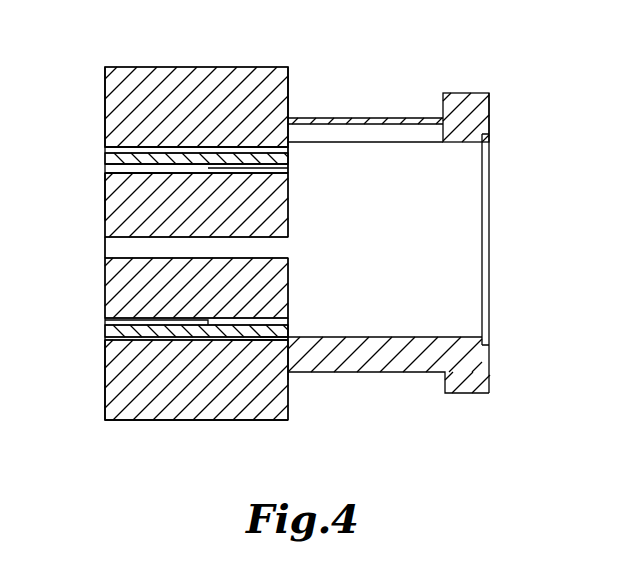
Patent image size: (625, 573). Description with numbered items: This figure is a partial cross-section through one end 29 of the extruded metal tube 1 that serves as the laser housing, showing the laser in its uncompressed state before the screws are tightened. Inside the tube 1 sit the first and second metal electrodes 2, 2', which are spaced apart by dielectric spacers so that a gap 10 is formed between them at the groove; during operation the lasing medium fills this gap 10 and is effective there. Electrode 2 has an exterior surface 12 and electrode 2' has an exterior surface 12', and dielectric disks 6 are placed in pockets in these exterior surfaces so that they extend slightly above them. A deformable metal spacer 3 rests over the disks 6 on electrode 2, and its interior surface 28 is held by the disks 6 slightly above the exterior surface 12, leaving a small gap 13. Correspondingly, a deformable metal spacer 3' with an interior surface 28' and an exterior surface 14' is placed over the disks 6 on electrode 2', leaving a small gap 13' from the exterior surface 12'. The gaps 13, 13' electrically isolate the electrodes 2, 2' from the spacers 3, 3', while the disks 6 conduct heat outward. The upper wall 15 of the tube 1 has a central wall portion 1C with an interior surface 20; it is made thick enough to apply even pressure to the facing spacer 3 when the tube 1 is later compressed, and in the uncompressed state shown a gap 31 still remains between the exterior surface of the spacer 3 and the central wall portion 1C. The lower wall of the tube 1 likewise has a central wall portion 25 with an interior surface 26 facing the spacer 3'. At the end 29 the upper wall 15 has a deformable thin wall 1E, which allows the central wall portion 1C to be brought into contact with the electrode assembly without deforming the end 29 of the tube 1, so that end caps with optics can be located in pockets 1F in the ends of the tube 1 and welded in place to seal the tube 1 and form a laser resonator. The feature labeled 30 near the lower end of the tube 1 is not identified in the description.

The extruded metal tube 1 is at (125, 421).
The central wall portion 1C is at (156, 107).
The deformable thin wall 1E is at (390, 118).
The pockets 1F is at (490, 246).
The first metal electrode 2 is at (153, 212).
The second metal electrode 2' is at (157, 290).
The deformable metal spacer 3 is at (157, 149).
The deformable metal spacer 3' is at (154, 334).
The disks 6 is at (104, 171).
The gap 10 is at (290, 246).
The exterior surface 12 is at (196, 102).
The exterior surface 12' is at (298, 403).
The gap 13 is at (319, 131).
The gap 13' is at (340, 366).
The exterior surface 14' is at (168, 355).
The upper wall 15 is at (153, 67).
The interior surface 20 is at (233, 150).
The central wall portion 25 is at (187, 421).
The interior surface 26 is at (120, 341).
The interior surface 28 is at (107, 196).
The interior surface 28' is at (259, 399).
The end 29 is at (468, 93).
The lower flange 30 is at (427, 374).
The gap 31 is at (265, 150).